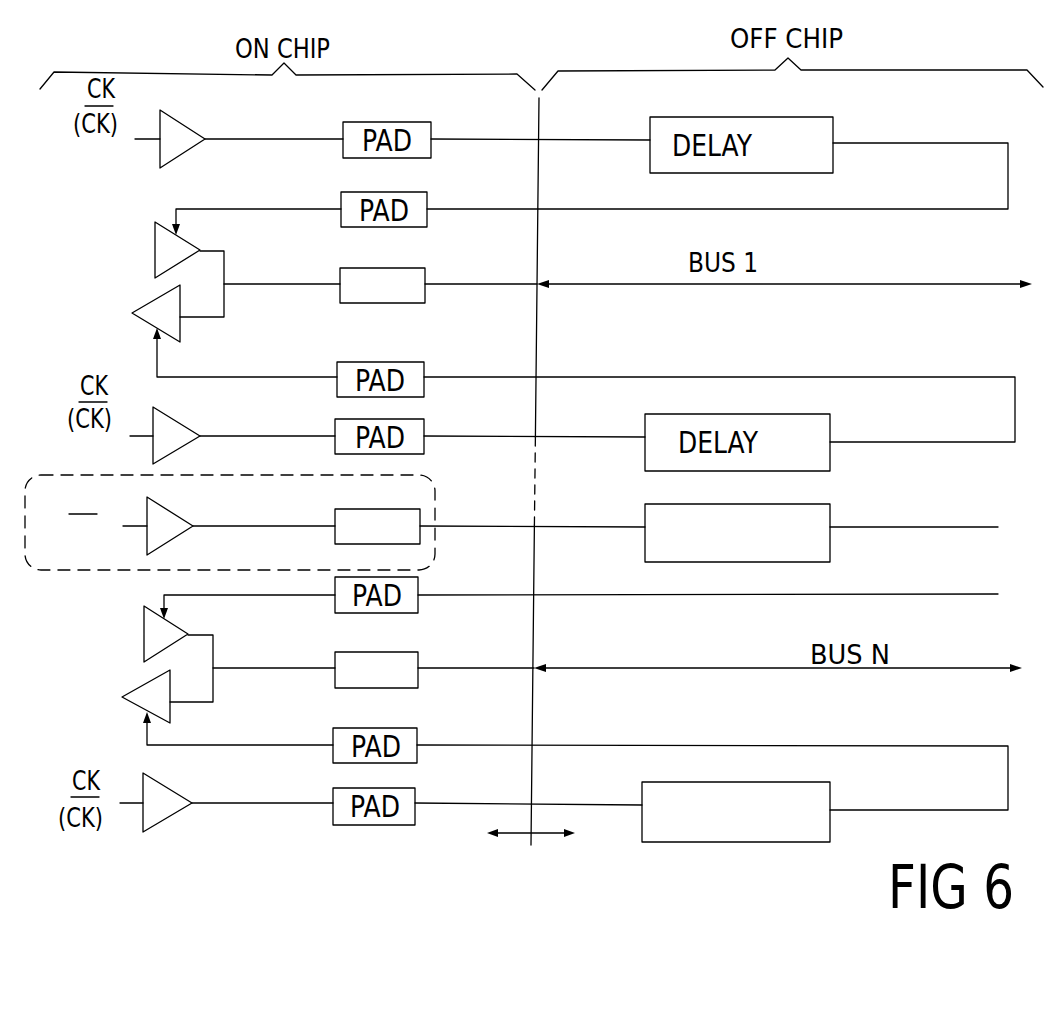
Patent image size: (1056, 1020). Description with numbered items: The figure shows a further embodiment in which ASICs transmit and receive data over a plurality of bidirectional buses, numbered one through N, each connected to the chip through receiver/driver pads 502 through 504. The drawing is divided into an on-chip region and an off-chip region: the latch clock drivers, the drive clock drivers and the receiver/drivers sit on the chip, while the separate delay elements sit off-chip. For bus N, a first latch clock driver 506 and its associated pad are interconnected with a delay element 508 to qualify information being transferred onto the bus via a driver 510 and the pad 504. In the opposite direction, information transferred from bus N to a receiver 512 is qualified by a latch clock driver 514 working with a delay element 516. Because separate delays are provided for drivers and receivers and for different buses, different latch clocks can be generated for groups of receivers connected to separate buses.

The receiver/driver pad 502 is at (405, 268).
The receiver/driver pad 504 is at (388, 652).
The first latch clock driver 506 is at (80, 475).
The delay element 508 is at (825, 503).
The driver 510 is at (144, 631).
The receiver 512 is at (137, 690).
The latch clock driver 514 is at (135, 760).
The delay element 516 is at (828, 784).